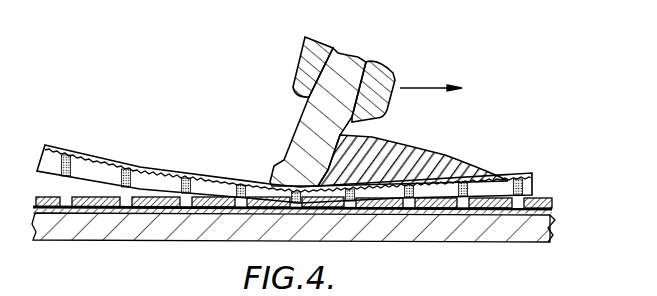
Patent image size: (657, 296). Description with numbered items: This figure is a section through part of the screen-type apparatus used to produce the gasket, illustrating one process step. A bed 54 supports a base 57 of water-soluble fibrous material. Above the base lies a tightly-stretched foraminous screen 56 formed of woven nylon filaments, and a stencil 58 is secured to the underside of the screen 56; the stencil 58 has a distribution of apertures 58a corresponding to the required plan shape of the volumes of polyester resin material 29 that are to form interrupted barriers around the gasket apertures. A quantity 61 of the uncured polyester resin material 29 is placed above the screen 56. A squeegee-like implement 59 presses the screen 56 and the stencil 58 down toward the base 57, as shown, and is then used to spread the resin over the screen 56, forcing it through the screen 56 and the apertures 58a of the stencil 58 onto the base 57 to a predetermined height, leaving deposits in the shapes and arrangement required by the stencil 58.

The polyester resin material 29 is at (94, 207).
The bed 54 is at (523, 228).
The foraminous screen 56 is at (503, 182).
The base 57 is at (553, 213).
The stencil 58 is at (532, 182).
The apertures 58a is at (499, 172).
The squeegee-like implement 59 is at (353, 58).
The quantity of polyester resin material 61 is at (408, 153).